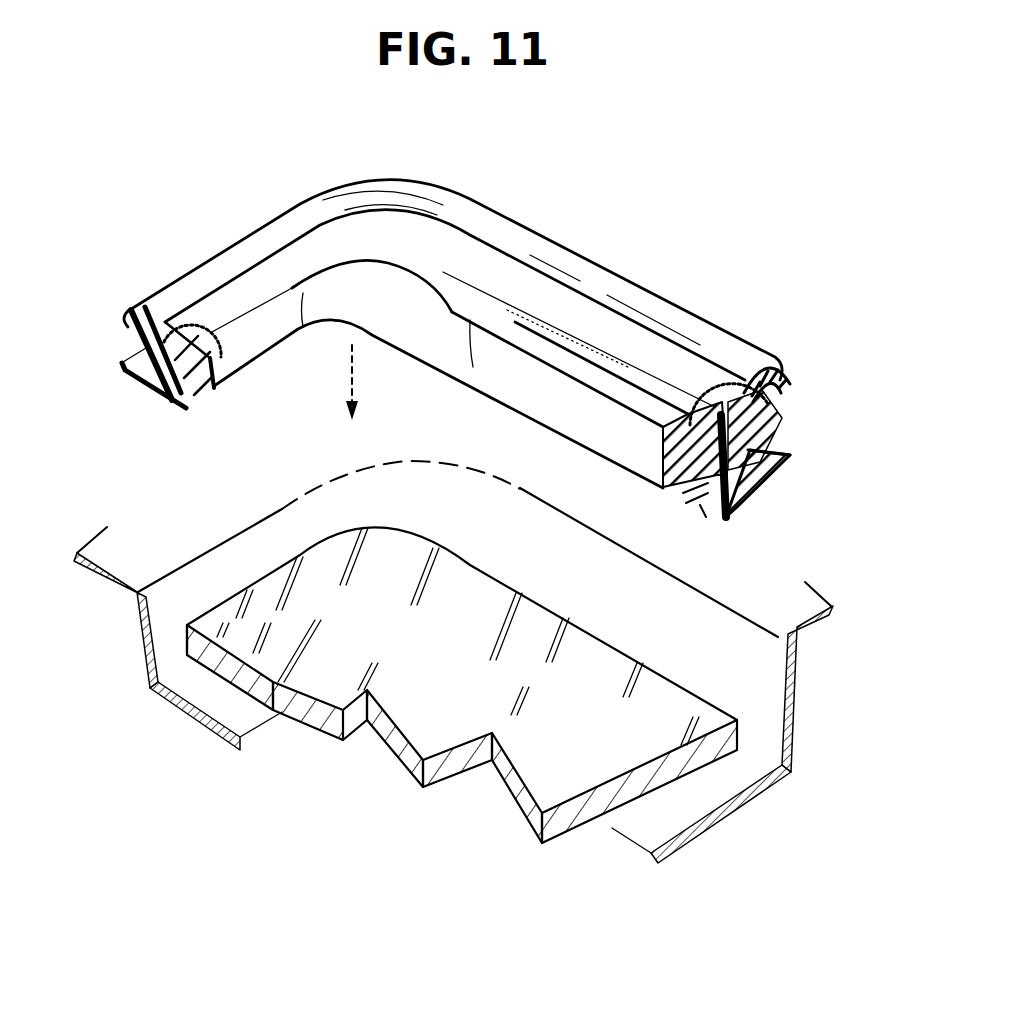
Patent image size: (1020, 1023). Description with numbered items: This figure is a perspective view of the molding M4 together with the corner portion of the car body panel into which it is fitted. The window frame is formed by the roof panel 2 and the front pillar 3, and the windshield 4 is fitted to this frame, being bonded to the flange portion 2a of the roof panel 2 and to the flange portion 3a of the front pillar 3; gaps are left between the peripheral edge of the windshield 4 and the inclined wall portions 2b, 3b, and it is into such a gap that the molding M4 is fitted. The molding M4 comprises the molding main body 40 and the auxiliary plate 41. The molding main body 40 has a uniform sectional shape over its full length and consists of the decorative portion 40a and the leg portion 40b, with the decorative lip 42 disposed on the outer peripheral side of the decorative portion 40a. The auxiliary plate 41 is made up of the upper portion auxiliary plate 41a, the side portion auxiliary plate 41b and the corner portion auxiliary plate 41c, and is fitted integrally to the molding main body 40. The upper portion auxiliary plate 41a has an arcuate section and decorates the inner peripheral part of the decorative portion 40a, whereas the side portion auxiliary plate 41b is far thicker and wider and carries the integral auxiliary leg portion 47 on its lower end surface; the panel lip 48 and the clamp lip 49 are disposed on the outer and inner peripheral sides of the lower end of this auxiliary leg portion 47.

The molding M4 is at (489, 194).
The molding main body 40 is at (577, 312).
The decorative portion 40a is at (722, 385).
The leg portion 40b is at (752, 397).
The decorative lip 42 is at (760, 362).
The auxiliary leg portion 47 is at (757, 449).
The panel lip 48 is at (752, 498).
The clamp lip 49 is at (703, 517).
The auxiliary plate 41 is at (298, 364).
The upper portion auxiliary plate 41a is at (238, 360).
The side portion auxiliary plate 41b is at (615, 395).
The corner portion auxiliary plate 41c is at (415, 340).
The roof panel 2 is at (138, 557).
The flange portion 2a is at (193, 720).
The inclined wall portion 2b is at (138, 647).
The front pillar 3 is at (755, 605).
The flange portion 3a is at (743, 800).
The inclined wall portion 3b is at (790, 713).
The windshield 4 is at (437, 717).